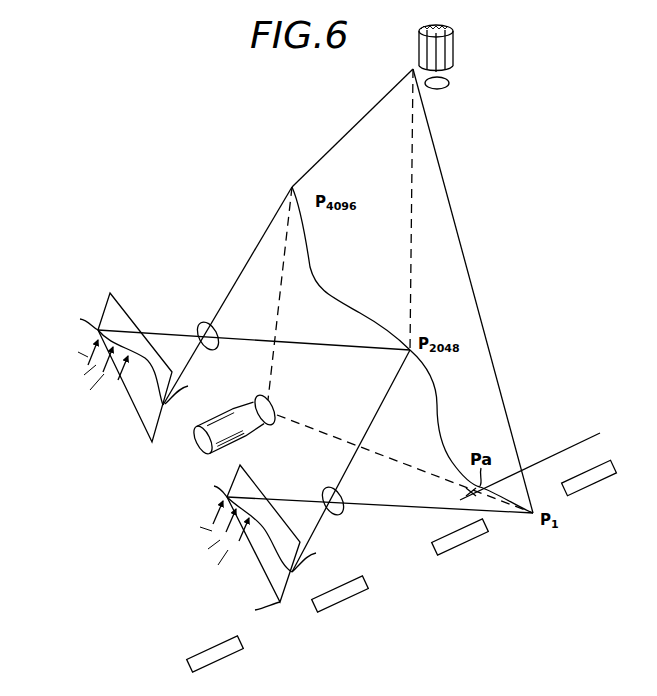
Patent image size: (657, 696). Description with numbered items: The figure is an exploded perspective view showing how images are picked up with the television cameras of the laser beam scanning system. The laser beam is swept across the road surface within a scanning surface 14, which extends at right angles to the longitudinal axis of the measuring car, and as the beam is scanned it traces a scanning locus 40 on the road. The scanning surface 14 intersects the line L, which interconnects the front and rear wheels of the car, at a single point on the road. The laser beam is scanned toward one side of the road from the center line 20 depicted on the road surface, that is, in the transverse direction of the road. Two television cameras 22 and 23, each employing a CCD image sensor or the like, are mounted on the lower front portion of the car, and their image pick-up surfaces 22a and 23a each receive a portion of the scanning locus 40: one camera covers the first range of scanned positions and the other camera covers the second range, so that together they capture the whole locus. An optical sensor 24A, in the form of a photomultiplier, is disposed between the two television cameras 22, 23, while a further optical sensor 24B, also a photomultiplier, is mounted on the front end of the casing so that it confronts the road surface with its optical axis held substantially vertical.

The scanning surface 14 is at (478, 301).
The center line 20 is at (478, 540).
The television camera 22 is at (330, 524).
The second display panel 22a is at (268, 474).
The television camera 23 is at (176, 305).
The first display panel 23a is at (106, 308).
The optical sensor 24A is at (240, 435).
The optical sensor 24B is at (455, 48).
The scanning locus 40 is at (438, 402).
The line L is at (576, 438).